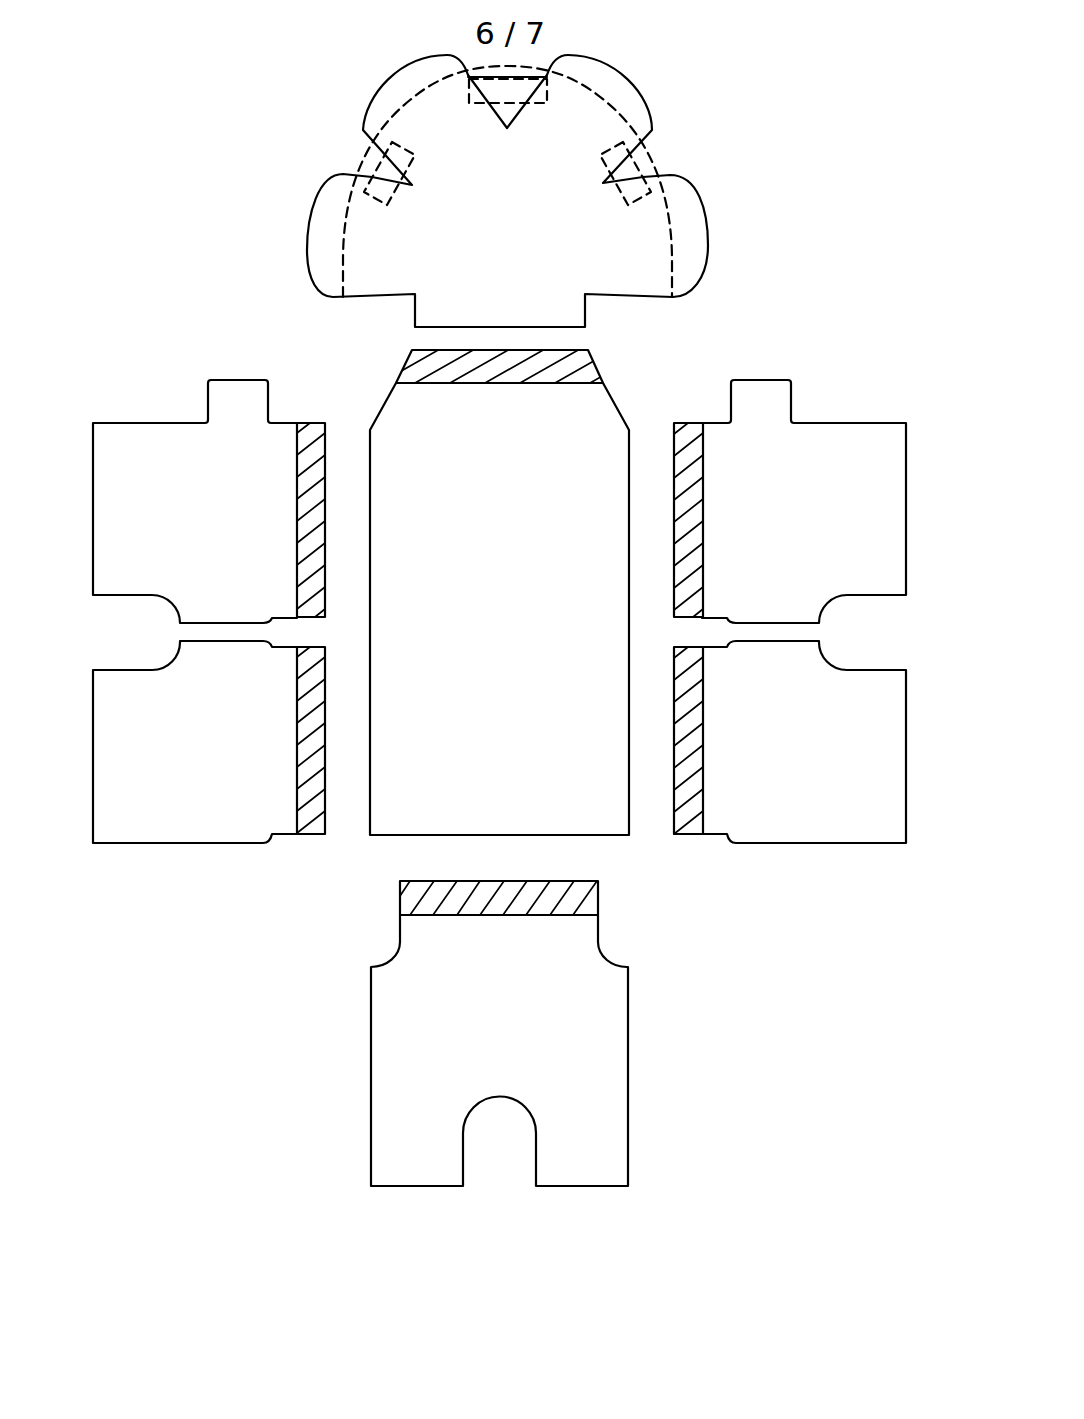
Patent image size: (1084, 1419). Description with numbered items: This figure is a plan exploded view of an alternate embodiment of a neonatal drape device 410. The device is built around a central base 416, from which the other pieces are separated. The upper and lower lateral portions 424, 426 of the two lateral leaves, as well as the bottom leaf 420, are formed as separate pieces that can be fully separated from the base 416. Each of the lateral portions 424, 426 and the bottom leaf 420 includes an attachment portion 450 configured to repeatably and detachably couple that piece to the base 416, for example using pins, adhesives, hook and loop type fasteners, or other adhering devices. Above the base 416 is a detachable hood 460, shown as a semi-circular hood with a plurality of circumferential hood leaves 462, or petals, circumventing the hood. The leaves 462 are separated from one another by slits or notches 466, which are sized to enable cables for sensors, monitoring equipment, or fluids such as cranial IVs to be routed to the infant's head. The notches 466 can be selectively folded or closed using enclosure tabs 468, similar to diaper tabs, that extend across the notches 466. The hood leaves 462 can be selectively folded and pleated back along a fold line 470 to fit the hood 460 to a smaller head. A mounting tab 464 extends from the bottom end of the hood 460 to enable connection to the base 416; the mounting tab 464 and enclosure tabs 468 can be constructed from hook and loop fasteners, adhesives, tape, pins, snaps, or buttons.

The neonatal drape device 410 is at (241, 269).
The base 416 is at (443, 455).
The bottom leaf 420 is at (568, 1053).
The upper lateral portion 424 is at (138, 497).
The lower lateral portion 426 is at (173, 763).
The attachment portion 450 is at (330, 437).
The detachable hood 460 is at (655, 68).
The hood leaf 462 is at (334, 207).
The mounting tab 464 is at (588, 303).
The notch 466 is at (353, 147).
The enclosure tab 468 is at (520, 87).
The fold line 470 is at (630, 127).